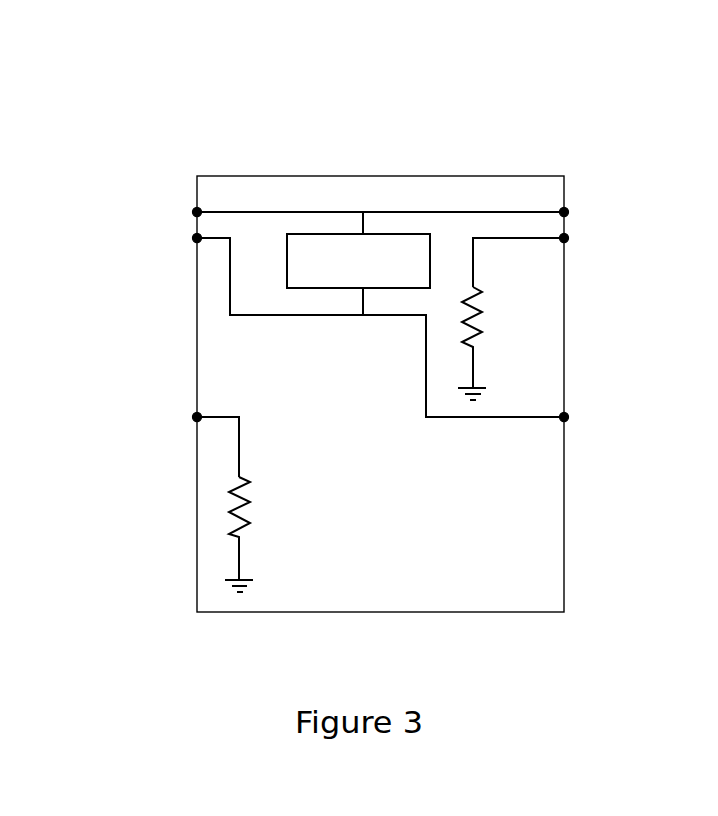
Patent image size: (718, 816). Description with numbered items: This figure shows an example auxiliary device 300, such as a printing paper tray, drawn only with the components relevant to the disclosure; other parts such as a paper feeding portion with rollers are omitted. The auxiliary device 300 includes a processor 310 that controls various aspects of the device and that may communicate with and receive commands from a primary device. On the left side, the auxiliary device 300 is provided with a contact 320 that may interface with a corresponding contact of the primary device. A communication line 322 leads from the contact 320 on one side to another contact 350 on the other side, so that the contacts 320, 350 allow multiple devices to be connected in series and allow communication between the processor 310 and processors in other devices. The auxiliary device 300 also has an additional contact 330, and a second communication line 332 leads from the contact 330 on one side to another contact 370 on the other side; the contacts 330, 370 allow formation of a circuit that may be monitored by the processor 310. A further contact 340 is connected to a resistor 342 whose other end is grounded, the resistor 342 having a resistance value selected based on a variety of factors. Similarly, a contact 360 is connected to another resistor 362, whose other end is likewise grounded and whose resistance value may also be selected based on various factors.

The auxiliary device 300 is at (458, 134).
The processor 310 is at (318, 233).
The contact 320 is at (197, 212).
The communication line 322 is at (407, 212).
The contact 330 is at (197, 238).
The second communication line 332 is at (230, 288).
The contact 340 is at (197, 417).
The resistor 342 is at (230, 510).
The contact 350 is at (564, 212).
The contact 360 is at (564, 238).
The resistor 362 is at (481, 313).
The contact 370 is at (564, 417).